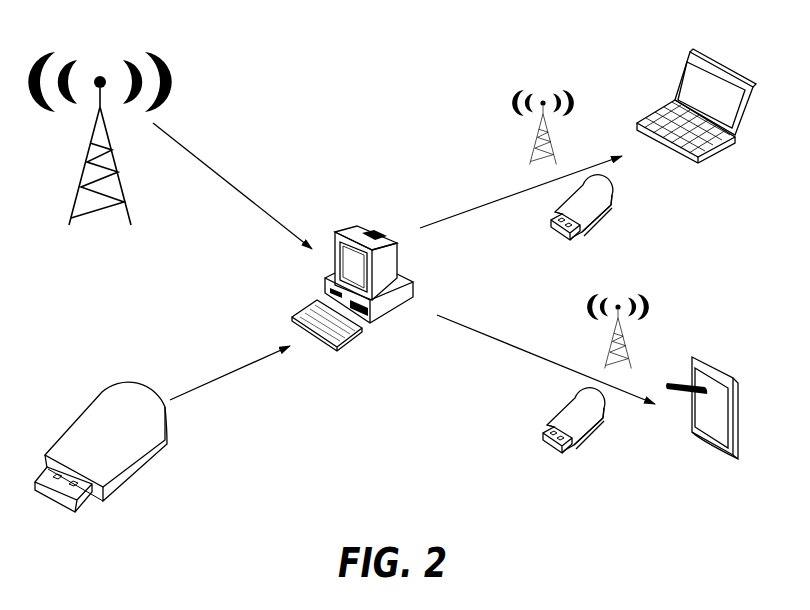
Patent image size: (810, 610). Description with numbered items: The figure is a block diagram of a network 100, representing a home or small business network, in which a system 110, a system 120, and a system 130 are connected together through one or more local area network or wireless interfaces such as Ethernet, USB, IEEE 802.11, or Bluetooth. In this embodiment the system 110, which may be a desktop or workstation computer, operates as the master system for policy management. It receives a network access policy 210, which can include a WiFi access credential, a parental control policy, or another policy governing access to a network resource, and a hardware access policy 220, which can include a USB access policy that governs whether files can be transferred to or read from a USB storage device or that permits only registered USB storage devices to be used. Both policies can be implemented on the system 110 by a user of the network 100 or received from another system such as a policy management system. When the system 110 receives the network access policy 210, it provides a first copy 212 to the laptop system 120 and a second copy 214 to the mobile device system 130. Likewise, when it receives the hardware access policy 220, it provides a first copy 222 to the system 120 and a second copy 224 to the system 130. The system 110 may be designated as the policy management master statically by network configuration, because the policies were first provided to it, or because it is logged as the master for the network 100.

The network 100 is at (101, 460).
The system 110 is at (337, 233).
The system 120 is at (715, 56).
The system 130 is at (710, 362).
The network access policy 210 is at (84, 184).
The first copy of the network access policy 212 is at (537, 150).
The second copy of the network access policy 214 is at (612, 352).
The hardware access policy 220 is at (92, 412).
The first copy of the hardware access policy 222 is at (609, 210).
The second copy of the hardware access policy 224 is at (560, 412).